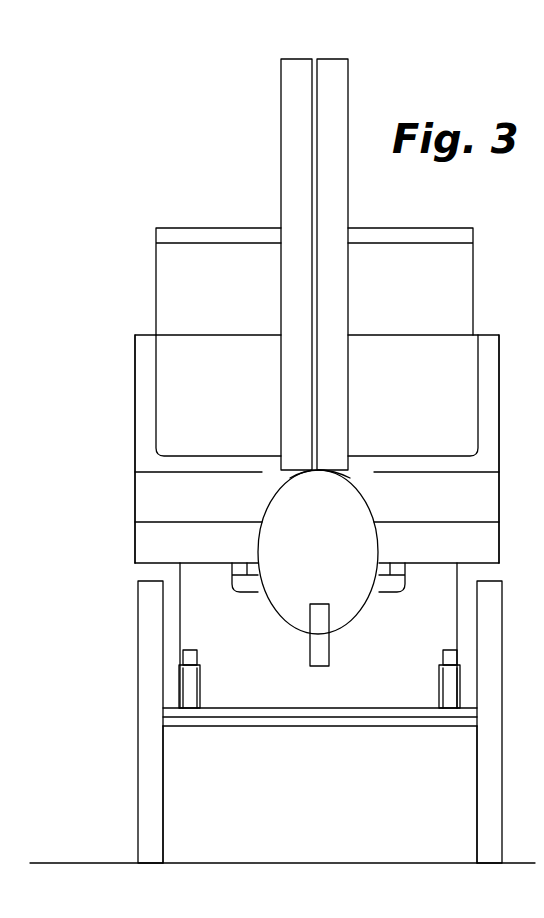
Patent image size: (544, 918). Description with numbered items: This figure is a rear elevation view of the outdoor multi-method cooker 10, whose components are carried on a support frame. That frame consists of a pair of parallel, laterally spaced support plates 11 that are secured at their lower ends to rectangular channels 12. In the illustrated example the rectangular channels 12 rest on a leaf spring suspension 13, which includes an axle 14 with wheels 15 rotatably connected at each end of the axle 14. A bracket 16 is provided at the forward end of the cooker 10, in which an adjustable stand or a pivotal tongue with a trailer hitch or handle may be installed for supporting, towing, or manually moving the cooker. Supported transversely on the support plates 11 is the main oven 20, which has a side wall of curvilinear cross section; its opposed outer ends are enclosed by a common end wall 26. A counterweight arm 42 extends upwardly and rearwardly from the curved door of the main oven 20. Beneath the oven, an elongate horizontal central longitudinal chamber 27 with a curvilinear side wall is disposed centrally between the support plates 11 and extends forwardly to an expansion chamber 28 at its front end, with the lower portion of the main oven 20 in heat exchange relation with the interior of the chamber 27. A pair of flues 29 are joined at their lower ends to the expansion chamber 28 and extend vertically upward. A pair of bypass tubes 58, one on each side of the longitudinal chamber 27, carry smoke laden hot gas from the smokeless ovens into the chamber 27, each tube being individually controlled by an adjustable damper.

The outdoor multi-method cooker 10 is at (136, 212).
The support plates 11 is at (180, 608).
The rectangular channels 12 is at (197, 657).
The leaf spring suspension 13 is at (200, 699).
The axle 14 is at (314, 727).
The wheels 15 is at (160, 822).
The bracket 16 is at (310, 653).
The main oven 20 is at (222, 408).
The common end wall 26 is at (135, 434).
The central longitudinal chamber 27 is at (330, 557).
The expansion chamber 28 is at (352, 497).
The flues 29 is at (281, 156).
The counterweight arm 42 is at (158, 286).
The bypass tubes 58 is at (238, 585).